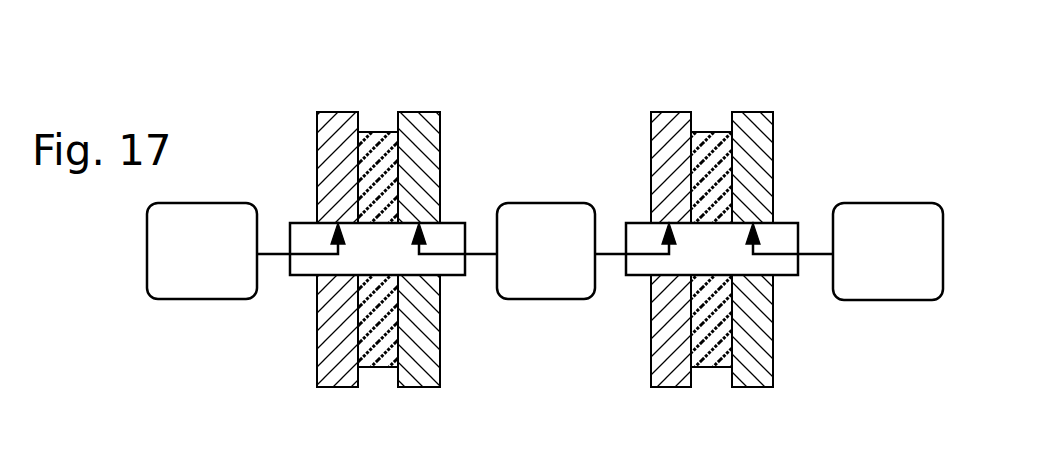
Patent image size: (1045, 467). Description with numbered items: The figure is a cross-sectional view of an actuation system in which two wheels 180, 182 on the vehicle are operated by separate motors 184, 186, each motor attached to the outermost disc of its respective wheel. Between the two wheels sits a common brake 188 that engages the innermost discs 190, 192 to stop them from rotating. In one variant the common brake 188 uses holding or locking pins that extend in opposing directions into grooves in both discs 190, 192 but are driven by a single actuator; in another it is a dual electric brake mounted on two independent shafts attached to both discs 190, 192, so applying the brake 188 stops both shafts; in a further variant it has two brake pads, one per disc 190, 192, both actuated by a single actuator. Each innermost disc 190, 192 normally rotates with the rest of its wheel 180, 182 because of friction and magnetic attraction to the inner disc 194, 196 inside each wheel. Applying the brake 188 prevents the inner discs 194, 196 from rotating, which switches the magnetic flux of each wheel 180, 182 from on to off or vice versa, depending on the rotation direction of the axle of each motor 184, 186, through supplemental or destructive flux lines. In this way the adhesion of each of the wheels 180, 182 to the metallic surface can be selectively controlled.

The wheel 180 is at (404, 86).
The wheel 182 is at (684, 86).
The motor 184 is at (185, 300).
The motor 186 is at (767, 388).
The common brake 188 is at (557, 300).
The innermost disc 190 is at (430, 388).
The innermost disc 192 is at (671, 388).
The inner disc 194 is at (378, 132).
The inner disc 196 is at (708, 132).